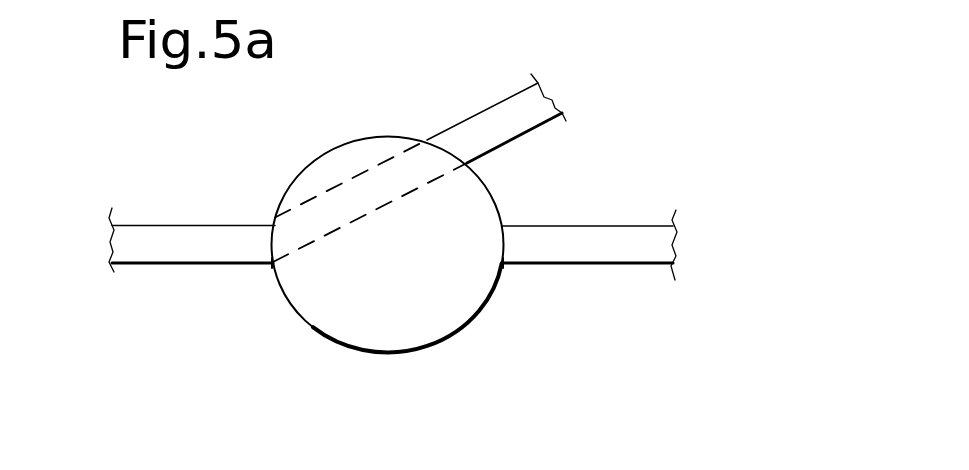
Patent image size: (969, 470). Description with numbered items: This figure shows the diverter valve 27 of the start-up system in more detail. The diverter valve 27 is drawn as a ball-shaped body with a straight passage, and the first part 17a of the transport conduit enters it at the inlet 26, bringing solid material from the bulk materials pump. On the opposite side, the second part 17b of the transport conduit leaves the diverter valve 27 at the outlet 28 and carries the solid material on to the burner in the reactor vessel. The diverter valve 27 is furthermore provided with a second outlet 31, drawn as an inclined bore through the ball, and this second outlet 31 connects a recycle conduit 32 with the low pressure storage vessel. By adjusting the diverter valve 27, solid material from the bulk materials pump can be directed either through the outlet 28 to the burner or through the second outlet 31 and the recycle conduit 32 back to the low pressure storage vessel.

The first part of the transport conduit 17a is at (177, 237).
The second part of the transport conduit 17b is at (620, 235).
The inlet 26 is at (272, 265).
The diverter valve 27 is at (422, 348).
The outlet 28 is at (503, 267).
The second outlet 31 is at (445, 152).
The recycle conduit 32 is at (513, 113).